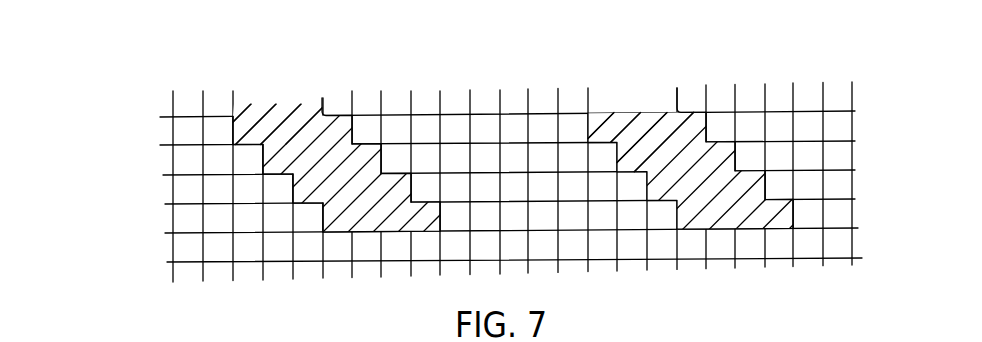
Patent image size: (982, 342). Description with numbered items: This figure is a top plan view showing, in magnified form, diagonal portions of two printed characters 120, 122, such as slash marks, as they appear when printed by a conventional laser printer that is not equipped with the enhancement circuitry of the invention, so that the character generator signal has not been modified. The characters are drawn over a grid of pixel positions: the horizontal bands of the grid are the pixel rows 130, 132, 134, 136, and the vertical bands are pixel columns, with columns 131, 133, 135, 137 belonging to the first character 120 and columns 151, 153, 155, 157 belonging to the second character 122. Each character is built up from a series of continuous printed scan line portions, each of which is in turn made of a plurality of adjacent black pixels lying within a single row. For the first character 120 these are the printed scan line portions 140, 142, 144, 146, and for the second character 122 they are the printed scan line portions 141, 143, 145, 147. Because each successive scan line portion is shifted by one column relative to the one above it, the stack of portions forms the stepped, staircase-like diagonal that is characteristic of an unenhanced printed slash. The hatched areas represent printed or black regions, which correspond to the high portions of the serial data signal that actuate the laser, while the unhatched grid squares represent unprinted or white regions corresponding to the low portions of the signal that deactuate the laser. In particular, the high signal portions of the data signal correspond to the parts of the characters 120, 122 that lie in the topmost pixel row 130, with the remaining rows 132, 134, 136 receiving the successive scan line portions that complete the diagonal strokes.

The printed character 120 is at (419, 104).
The printed character 122 is at (767, 95).
The pixel row 130 is at (224, 131).
The pixel row 132 is at (224, 160).
The pixel row 134 is at (224, 190).
The pixel row 136 is at (224, 219).
The pixel column 131 is at (252, 103).
The pixel column 133 is at (277, 102).
The pixel column 135 is at (305, 102).
The pixel column 137 is at (333, 102).
The printed scan line portion 140 is at (353, 130).
The printed scan line portion 142 is at (381, 161).
The printed scan line portion 144 is at (412, 191).
The printed scan line portion 146 is at (437, 223).
The pixel column 151 is at (603, 98).
The pixel column 153 is at (629, 98).
The pixel column 155 is at (658, 98).
The pixel column 157 is at (690, 98).
The printed scan line portion 141 is at (707, 127).
The printed scan line portion 143 is at (735, 157).
The printed scan line portion 145 is at (763, 185).
The printed scan line portion 147 is at (795, 215).